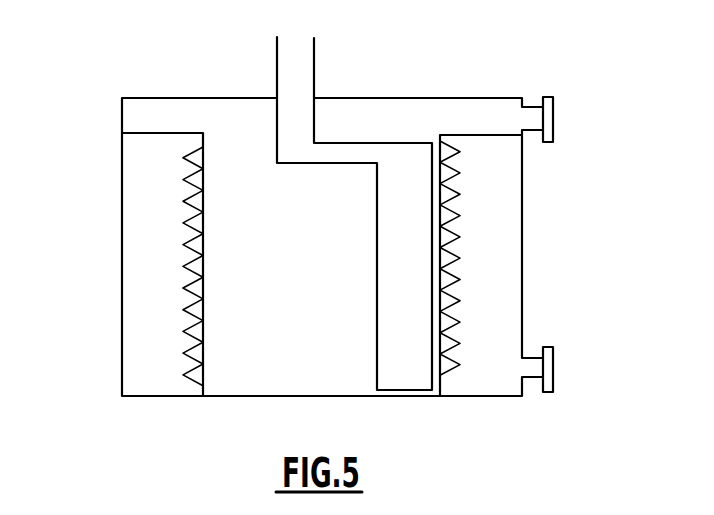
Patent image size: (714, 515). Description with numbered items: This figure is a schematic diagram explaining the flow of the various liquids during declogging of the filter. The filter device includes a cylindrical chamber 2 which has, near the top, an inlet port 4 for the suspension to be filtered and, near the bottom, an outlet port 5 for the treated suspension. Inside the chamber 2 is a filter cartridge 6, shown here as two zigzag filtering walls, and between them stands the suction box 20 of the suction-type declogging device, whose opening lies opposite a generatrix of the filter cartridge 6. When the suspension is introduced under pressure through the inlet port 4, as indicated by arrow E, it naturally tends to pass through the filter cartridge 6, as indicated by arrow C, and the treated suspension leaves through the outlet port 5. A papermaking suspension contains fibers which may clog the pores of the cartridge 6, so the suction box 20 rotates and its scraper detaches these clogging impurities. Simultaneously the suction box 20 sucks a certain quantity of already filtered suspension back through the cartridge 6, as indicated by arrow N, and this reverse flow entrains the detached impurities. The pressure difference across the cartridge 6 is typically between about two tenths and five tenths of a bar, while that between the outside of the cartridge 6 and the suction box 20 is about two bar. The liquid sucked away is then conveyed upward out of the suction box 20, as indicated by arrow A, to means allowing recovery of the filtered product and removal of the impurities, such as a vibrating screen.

The cylindrical chamber 2 is at (122, 212).
The inlet port 4 is at (555, 103).
The outlet port 5 is at (557, 383).
The filter cartridge 6 is at (195, 378).
The suction box 20 is at (406, 143).
The arrow A (flow of sucked-away liquid) A is at (293, 75).
The arrow E (suspension inflow) E is at (489, 118).
The arrow N (reverse flow through cartridge) N is at (472, 220).
The arrow C (filtration flow) C is at (170, 267).